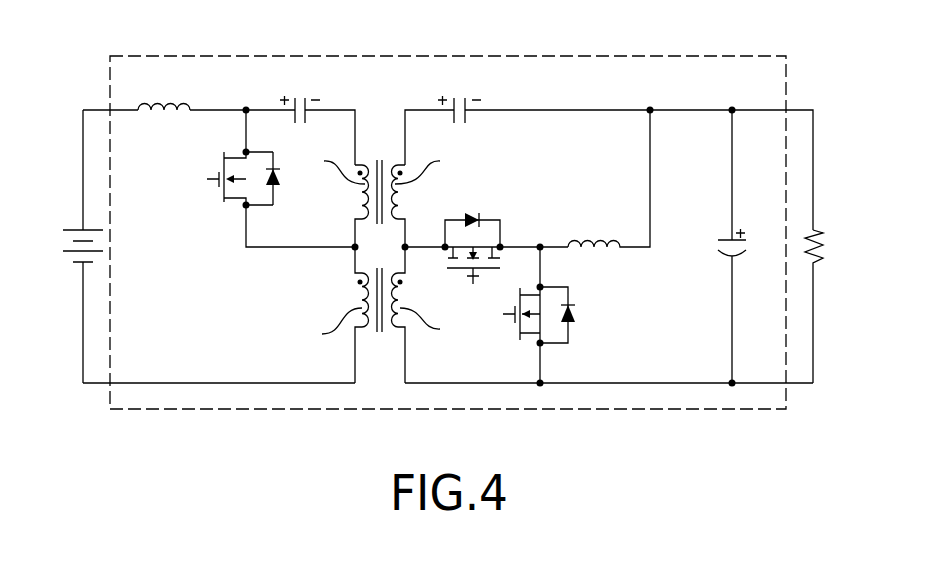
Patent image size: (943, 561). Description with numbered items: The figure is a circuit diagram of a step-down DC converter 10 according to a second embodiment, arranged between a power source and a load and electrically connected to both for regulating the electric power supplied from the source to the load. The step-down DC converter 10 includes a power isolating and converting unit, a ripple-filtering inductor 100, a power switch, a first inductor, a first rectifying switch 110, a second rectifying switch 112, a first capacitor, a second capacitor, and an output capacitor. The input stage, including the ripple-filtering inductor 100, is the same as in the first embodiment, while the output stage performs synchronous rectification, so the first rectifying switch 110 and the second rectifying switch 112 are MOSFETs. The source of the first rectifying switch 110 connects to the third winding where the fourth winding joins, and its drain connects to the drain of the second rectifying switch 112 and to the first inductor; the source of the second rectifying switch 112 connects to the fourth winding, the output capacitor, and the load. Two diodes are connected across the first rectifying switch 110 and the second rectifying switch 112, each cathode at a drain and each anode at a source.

The step-down DC converter 10 is at (421, 58).
The ripple-filtering inductor 100 is at (165, 101).
The first rectifying switch 110 is at (460, 270).
The second rectifying switch 112 is at (514, 332).